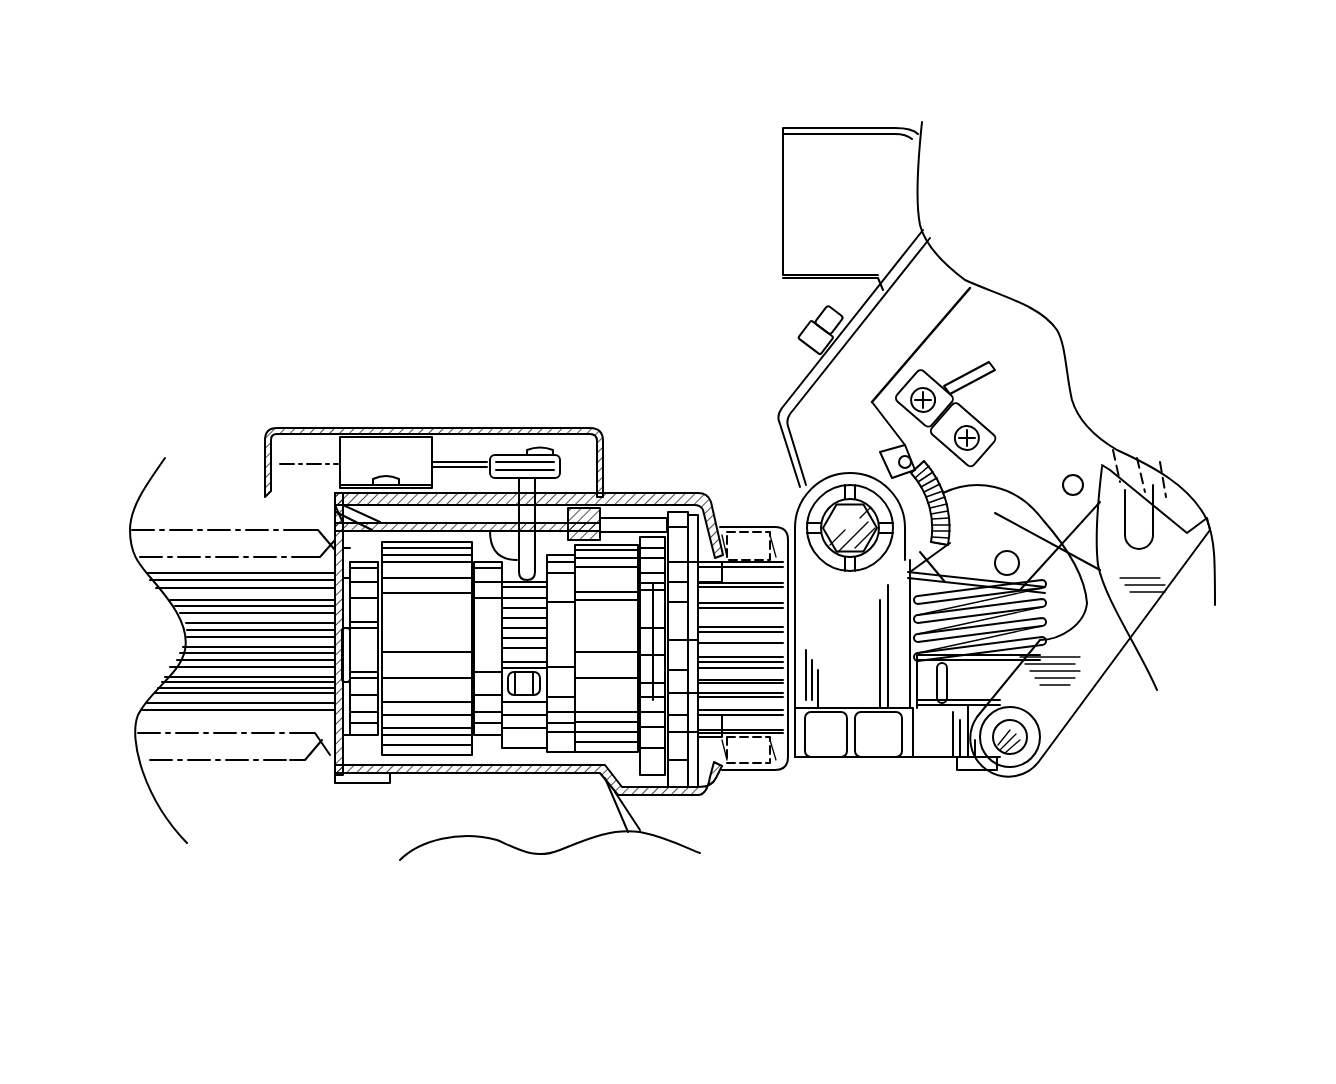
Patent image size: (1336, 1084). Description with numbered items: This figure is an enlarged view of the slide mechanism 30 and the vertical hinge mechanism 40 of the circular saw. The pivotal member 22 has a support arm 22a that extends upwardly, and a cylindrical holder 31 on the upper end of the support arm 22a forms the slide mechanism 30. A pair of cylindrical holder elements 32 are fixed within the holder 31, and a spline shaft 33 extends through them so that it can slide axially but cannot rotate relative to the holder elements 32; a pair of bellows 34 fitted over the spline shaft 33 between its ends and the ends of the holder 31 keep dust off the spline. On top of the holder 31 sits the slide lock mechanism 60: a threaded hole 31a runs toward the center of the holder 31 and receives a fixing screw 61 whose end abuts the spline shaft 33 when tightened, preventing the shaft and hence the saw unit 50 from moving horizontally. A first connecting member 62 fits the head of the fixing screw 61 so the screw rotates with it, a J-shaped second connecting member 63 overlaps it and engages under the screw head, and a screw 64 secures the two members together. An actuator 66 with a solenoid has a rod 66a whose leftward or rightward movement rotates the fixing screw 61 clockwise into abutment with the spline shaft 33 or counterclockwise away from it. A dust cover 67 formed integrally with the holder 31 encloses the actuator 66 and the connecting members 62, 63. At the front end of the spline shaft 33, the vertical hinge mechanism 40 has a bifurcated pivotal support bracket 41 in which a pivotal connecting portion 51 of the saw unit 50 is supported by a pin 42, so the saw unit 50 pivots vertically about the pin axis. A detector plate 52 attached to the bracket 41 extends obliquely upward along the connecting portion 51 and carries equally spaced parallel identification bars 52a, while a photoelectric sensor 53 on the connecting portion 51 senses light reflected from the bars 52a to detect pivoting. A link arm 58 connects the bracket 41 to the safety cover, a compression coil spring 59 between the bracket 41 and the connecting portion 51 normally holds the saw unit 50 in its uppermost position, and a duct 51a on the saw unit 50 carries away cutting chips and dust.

The pivotal member 22 is at (347, 514).
The support arm 22a is at (400, 772).
The slide mechanism 30 is at (210, 460).
The cylindrical holder 31 is at (655, 500).
The threaded hole 31a is at (505, 548).
The cylindrical holder elements 32 is at (600, 718).
The spline shaft 33 is at (215, 610).
The bellows 34 is at (177, 540).
The vertical hinge mechanism 40 is at (883, 775).
The pivotal support bracket 41 is at (842, 662).
The pin 42 is at (852, 537).
The saw unit 50 is at (878, 122).
The pivotal connecting portion 51 is at (995, 513).
The duct 51a is at (803, 172).
The detector plate 52 is at (990, 640).
The parallel identification bars 52a is at (1018, 492).
The photoelectric sensor 53 is at (950, 410).
The link arm 58 is at (1118, 622).
The compression coil spring 59 is at (940, 630).
The slide lock mechanism 60 is at (410, 405).
The fixing screw 61 is at (580, 470).
The first connecting member 62 is at (560, 470).
The second connecting member 63 is at (525, 500).
The screw 64 is at (530, 455).
The actuator 66 is at (355, 463).
The rod 66a is at (482, 540).
The dust cover 67 is at (305, 427).